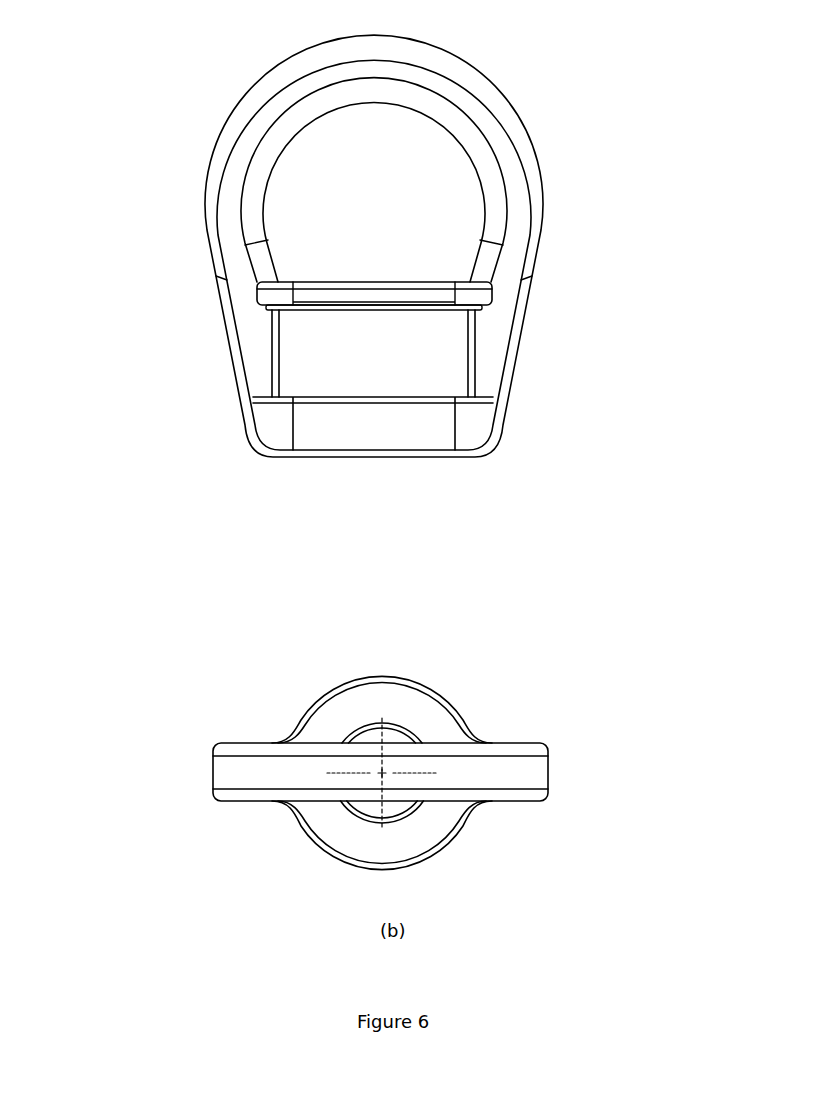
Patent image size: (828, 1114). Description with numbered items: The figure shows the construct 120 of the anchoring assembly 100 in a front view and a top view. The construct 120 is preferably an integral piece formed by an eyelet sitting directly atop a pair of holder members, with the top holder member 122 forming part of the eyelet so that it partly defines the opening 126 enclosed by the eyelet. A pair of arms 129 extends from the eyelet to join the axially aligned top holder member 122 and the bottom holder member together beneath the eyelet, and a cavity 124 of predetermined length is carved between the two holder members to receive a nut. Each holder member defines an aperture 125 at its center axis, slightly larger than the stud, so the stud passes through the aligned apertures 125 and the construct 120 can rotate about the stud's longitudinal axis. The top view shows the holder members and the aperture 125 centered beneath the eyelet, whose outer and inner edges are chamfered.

The anchoring assembly 100 is at (578, 104).
The construct 120 is at (233, 165).
The top holder member 122 is at (450, 290).
The cavity 124 is at (452, 365).
The aperture 125 is at (383, 742).
The opening 126 is at (390, 143).
The arms 129 is at (253, 334).